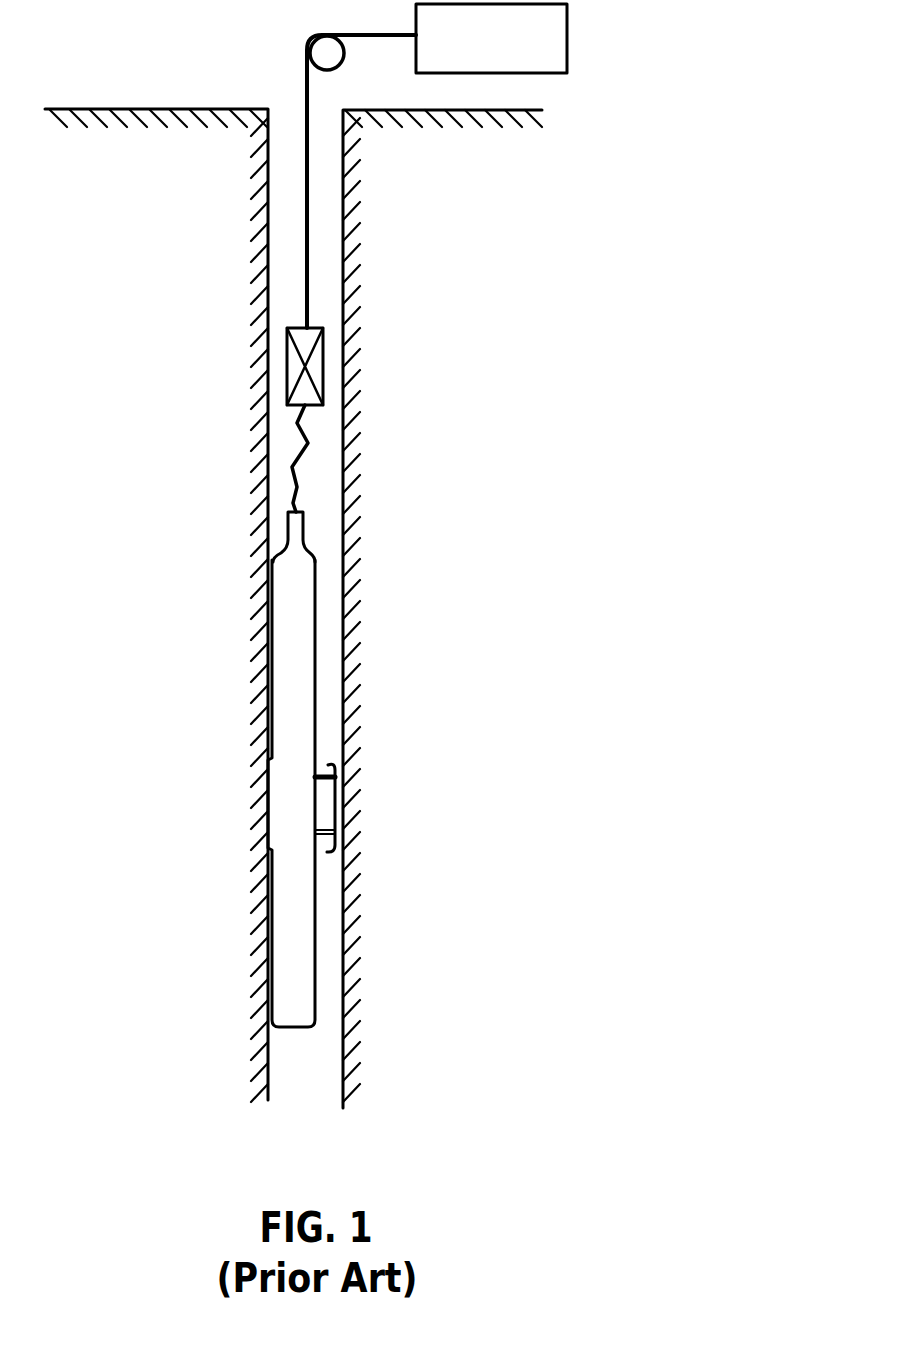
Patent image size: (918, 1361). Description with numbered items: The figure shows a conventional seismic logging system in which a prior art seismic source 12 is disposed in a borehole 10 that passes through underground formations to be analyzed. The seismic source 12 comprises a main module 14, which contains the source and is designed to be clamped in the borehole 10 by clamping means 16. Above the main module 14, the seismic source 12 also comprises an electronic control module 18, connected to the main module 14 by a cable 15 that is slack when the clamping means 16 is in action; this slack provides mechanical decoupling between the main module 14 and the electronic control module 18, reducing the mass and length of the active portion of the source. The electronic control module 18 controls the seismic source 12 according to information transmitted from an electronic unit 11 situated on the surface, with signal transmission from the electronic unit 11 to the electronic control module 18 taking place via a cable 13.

The borehole 10 is at (343, 236).
The electronic unit 11 is at (471, 56).
The seismic source 12 is at (270, 524).
The cable 13 is at (306, 92).
The main module 14 is at (295, 680).
The cable 15 is at (295, 492).
The clamping means 16 is at (334, 764).
The electronic control module 18 is at (315, 367).